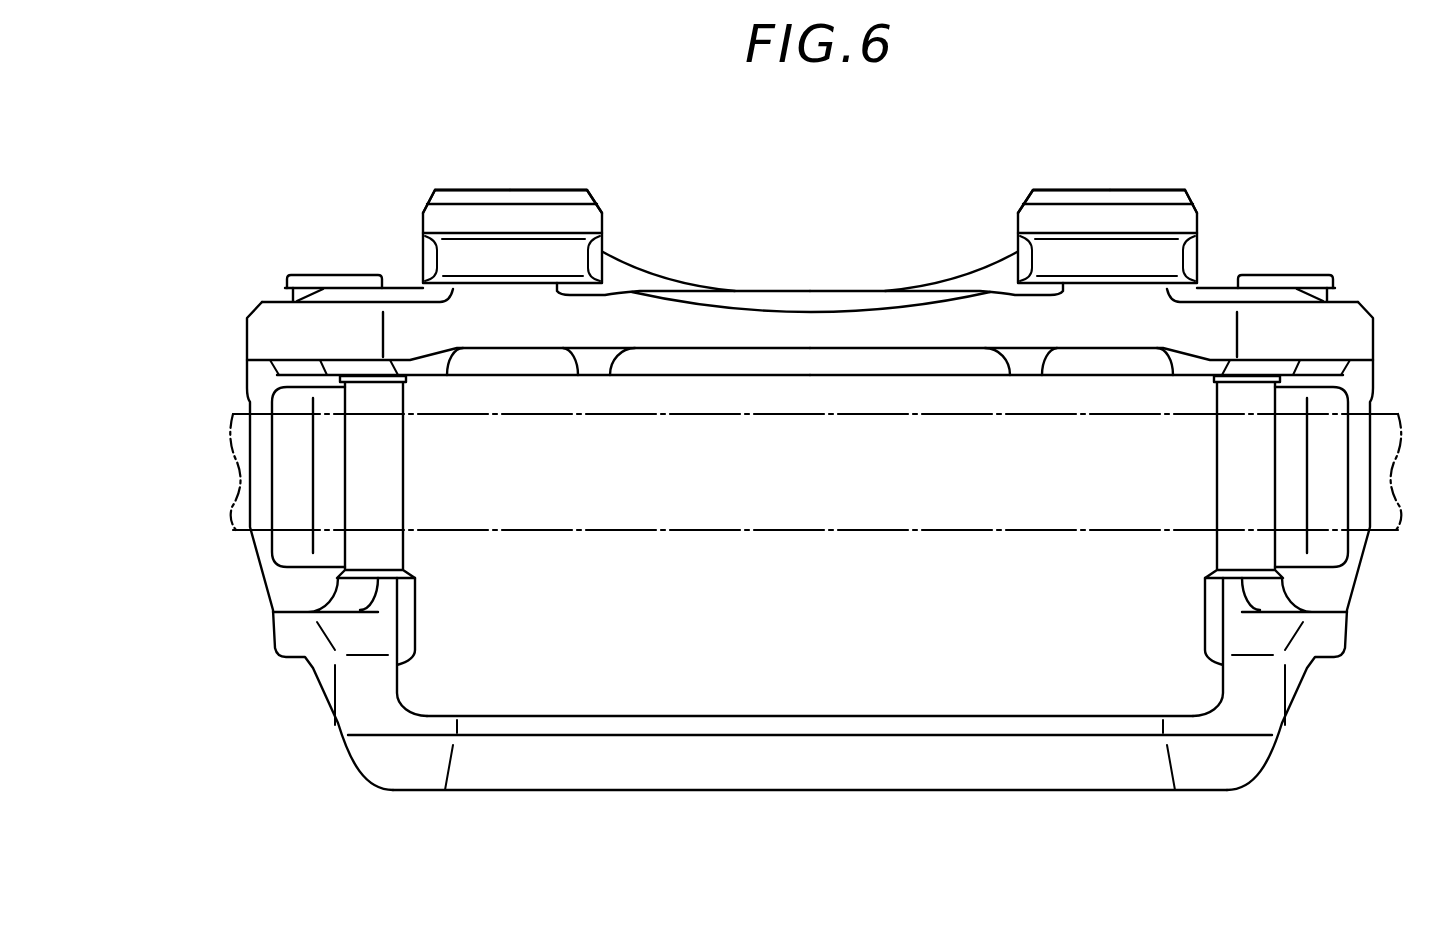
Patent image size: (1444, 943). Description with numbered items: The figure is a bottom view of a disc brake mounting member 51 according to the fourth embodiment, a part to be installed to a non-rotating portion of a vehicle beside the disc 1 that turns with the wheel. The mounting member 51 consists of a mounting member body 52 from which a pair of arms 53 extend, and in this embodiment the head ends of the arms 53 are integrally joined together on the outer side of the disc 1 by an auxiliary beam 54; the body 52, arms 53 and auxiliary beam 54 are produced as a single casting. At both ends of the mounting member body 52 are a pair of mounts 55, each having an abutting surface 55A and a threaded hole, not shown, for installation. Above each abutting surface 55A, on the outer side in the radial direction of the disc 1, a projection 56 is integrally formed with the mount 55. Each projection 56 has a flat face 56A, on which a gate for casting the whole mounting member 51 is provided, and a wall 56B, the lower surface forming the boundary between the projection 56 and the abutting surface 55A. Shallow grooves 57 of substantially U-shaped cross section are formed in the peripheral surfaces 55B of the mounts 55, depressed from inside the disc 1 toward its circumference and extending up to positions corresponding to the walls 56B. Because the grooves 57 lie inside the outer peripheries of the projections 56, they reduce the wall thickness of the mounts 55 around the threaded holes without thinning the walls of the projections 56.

The disc 1 is at (1385, 408).
The disc brake mounting member 51 is at (1358, 298).
The mounting member body 52 is at (800, 323).
The arms 53 is at (270, 580).
The auxiliary beam 54 is at (868, 778).
The mounts 55 is at (418, 221).
The abutting surfaces 55A is at (573, 193).
The peripheral surfaces 55B is at (595, 222).
The projections 56 is at (505, 183).
The flat faces 56A is at (457, 190).
The walls 56B is at (550, 192).
The grooves 57 is at (603, 251).